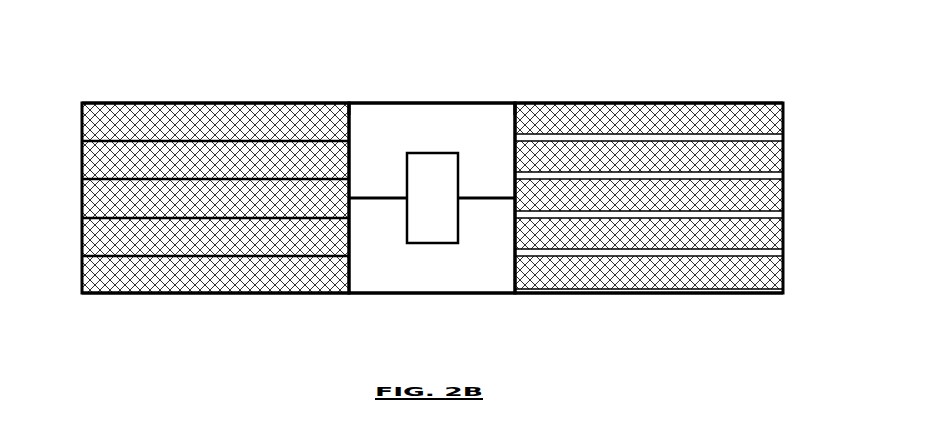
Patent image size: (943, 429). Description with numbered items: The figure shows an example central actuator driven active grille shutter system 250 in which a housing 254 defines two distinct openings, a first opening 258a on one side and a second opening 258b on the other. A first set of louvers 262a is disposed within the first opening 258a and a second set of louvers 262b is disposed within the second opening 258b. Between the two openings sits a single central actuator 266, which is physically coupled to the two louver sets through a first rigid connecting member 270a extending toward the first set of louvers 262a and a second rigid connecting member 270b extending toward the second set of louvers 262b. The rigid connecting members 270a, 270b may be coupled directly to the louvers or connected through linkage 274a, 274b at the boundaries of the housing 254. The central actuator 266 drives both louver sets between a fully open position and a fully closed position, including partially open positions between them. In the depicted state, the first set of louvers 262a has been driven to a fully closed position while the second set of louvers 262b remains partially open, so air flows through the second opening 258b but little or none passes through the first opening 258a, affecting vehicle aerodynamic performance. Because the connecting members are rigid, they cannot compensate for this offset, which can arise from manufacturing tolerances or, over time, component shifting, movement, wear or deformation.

The central actuator driven AGS system 250 is at (186, 362).
The housing 254 is at (435, 102).
The first opening 258a is at (82, 143).
The second opening 258b is at (783, 138).
The first set of louvers 262a is at (202, 88).
The second set of louvers 262b is at (650, 88).
The central actuator 266 is at (434, 153).
The first rigid connecting member 270a is at (366, 204).
The second rigid connecting member 270b is at (494, 204).
The first linkage 274a is at (351, 112).
The second linkage 274b is at (513, 110).